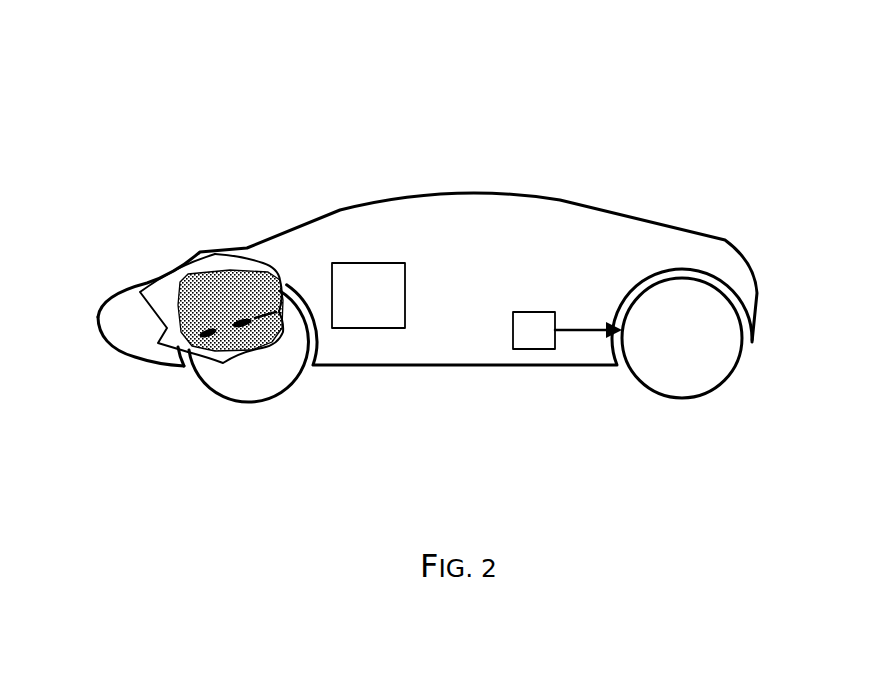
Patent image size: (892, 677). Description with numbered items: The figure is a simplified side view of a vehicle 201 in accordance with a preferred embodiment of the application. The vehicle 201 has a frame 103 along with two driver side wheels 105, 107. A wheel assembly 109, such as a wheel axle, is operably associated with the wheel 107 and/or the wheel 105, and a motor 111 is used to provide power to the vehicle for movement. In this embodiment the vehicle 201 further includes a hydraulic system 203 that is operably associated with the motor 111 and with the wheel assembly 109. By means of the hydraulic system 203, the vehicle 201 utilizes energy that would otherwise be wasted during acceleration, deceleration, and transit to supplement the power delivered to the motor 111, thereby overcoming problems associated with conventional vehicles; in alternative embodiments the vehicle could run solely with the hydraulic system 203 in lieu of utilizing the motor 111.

The vehicle 201 is at (165, 93).
The frame 103 is at (590, 208).
The wheel 105 is at (238, 403).
The wheel 107 is at (708, 392).
The wheel assembly 109 is at (513, 317).
The motor 111 is at (180, 278).
The hydraulic system 203 is at (385, 263).